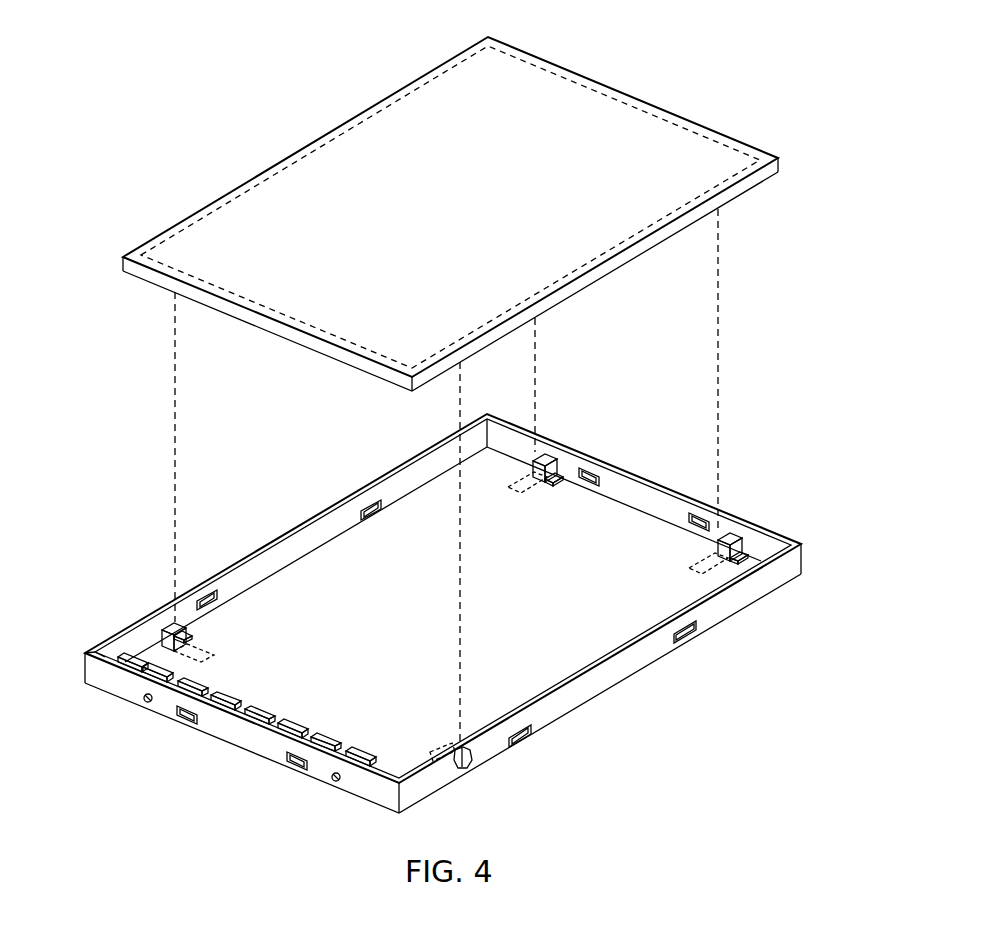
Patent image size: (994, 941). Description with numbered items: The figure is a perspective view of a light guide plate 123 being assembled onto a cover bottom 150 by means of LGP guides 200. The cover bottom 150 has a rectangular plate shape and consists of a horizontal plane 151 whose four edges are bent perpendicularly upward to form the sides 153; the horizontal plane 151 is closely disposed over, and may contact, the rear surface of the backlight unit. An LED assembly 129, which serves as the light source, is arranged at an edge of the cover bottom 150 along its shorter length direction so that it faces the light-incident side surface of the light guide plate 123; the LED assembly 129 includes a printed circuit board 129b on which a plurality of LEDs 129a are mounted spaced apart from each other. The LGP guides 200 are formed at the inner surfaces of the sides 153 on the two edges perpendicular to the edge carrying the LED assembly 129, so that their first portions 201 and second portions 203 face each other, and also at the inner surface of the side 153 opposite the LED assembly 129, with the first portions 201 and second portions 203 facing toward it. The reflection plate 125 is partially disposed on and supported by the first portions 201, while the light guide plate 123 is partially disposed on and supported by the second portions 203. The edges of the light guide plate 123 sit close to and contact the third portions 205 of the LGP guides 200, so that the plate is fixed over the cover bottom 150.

The light guide plate 123 is at (692, 129).
The reflection plate 125 is at (643, 532).
The LED assembly 129 is at (209, 655).
The LEDs 129a is at (120, 653).
The printed circuit board 129b is at (112, 590).
The cover bottom 150 is at (769, 506).
The horizontal plane 151 is at (755, 560).
The sides 153 is at (752, 535).
The LGP guide 200 is at (573, 429).
The first portion 201 is at (589, 456).
The second portion 203 is at (548, 460).
The third portion 205 is at (543, 456).